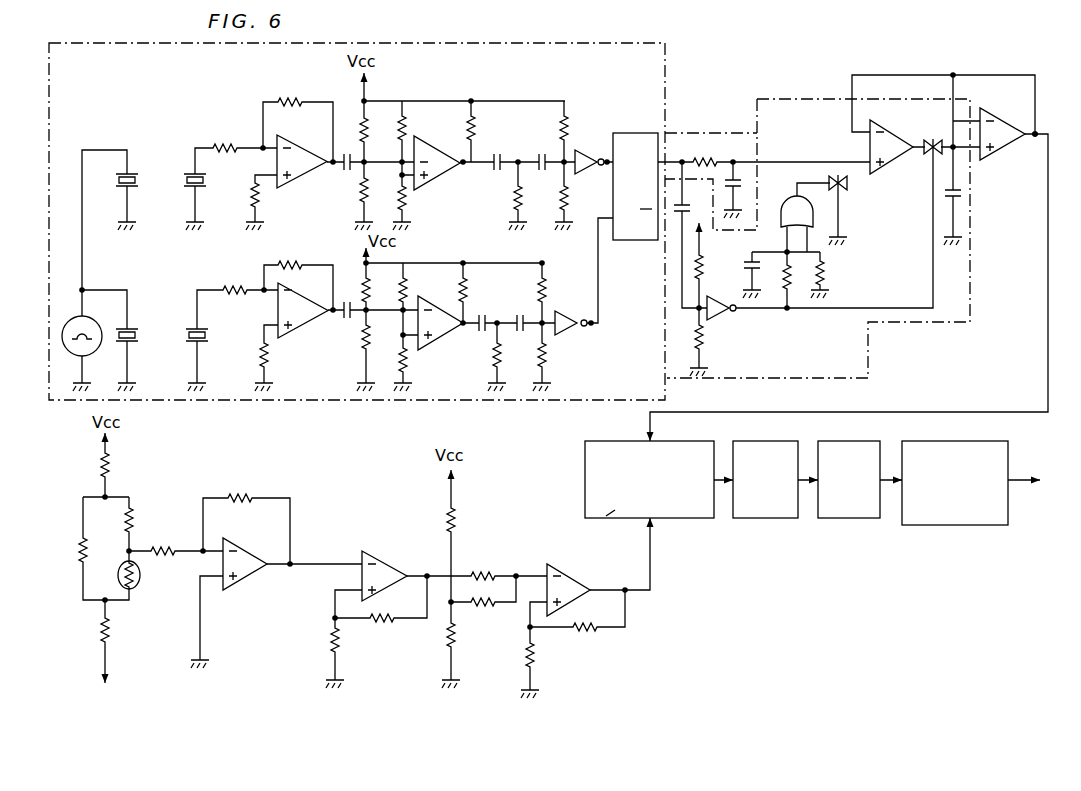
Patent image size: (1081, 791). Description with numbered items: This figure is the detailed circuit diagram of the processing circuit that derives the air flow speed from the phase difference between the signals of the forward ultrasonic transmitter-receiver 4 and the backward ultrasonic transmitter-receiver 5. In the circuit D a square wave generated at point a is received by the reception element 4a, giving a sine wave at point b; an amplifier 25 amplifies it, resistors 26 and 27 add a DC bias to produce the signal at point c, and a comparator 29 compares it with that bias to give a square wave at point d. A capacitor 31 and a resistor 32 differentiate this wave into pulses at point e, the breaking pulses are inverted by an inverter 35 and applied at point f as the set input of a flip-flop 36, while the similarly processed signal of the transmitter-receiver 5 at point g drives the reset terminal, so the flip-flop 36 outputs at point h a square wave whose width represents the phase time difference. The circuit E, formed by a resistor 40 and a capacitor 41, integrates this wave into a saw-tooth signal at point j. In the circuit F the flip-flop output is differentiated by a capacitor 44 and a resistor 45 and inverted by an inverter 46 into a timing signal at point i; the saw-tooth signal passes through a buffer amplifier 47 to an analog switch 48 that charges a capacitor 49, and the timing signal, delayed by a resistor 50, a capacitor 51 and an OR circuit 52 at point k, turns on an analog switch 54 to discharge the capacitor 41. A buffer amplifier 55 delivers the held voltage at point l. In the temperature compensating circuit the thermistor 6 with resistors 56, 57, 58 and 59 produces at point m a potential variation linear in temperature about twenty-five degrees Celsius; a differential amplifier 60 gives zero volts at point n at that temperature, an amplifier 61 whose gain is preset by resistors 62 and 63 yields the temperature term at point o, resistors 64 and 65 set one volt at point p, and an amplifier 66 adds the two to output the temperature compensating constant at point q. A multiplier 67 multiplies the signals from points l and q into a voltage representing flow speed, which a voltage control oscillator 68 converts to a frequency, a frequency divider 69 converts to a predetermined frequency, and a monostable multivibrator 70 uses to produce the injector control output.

The forward ultrasonic transmitter-receiver 4 is at (174, 189).
The reception element 4a is at (207, 187).
The backward ultrasonic transmitter-receiver 5 is at (181, 329).
The thermistor 6 is at (141, 572).
The amplifier 25 is at (300, 180).
The resistor 26 is at (367, 120).
The resistor 27 is at (362, 200).
The comparator 29 is at (440, 178).
The capacitor 31 is at (499, 153).
The resistor 32 is at (516, 195).
The inverter 35 is at (588, 172).
The flip-flop 36 is at (632, 133).
The resistor 40 is at (703, 158).
The capacitor 41 is at (735, 176).
The capacitor 44 is at (680, 215).
The resistor 45 is at (703, 345).
The inverter 46 is at (708, 297).
The buffer amplifier 47 is at (895, 122).
The analog switch 48 is at (935, 140).
The capacitor 49 is at (962, 195).
The resistor 50 is at (825, 266).
The capacitor 51 is at (757, 272).
The OR circuit 52 is at (790, 213).
The analog switch 54 is at (846, 188).
The buffer amplifier 55 is at (1002, 123).
The resistor 56 is at (110, 465).
The resistor 57 is at (132, 517).
The resistor 58 is at (80, 552).
The resistor 59 is at (110, 637).
The differential amplifier 60 is at (250, 576).
The amplifier 61 is at (386, 568).
The resistor 62 is at (332, 642).
The resistor 63 is at (380, 622).
The resistor 64 is at (454, 530).
The resistor 65 is at (455, 640).
The amplifier 66 is at (575, 580).
The multiplier 67 is at (680, 520).
The voltage control oscillator 68 is at (748, 520).
The frequency divider 69 is at (843, 520).
The monostable multivibrator 70 is at (938, 525).
The circuit D is at (550, 48).
The circuit E is at (722, 132).
The circuit F is at (820, 108).
The point a is at (127, 172).
The point b is at (193, 172).
The point c is at (361, 156).
The point d is at (460, 158).
The point e is at (562, 157).
The point f is at (600, 155).
The point g is at (585, 318).
The point h is at (681, 157).
The point i is at (736, 311).
The point j is at (862, 166).
The node k is at (797, 193).
The point l is at (1048, 134).
The point m is at (135, 548).
The point n is at (294, 560).
The point o is at (427, 572).
The point p is at (449, 606).
The node q is at (624, 587).